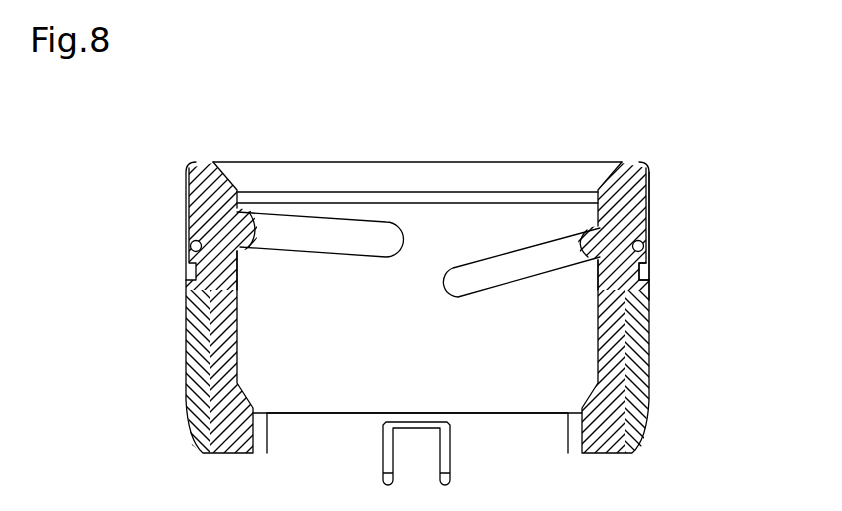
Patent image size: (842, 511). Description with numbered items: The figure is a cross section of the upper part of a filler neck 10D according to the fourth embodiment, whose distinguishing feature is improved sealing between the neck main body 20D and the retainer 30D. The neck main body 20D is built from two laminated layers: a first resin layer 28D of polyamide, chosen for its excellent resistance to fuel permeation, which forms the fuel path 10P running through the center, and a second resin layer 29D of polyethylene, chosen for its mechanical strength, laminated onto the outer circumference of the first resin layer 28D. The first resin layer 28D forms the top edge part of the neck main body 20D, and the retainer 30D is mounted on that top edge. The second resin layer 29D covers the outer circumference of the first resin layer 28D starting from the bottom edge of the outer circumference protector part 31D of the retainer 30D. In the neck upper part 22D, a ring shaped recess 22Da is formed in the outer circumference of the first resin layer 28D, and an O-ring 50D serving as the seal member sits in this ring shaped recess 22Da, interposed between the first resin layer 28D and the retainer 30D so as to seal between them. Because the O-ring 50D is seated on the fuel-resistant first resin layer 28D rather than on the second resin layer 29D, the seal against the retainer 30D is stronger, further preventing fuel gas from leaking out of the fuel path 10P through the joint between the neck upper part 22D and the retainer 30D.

The filler neck 10D is at (543, 138).
The retainer 30D is at (631, 162).
The outer circumference protector part 31D is at (652, 205).
The ring shaped recess 22Da is at (650, 241).
The O-ring 50D is at (651, 252).
The neck upper part 22D is at (651, 306).
The neck main body 20D is at (530, 355).
The first resin layer 28D is at (620, 371).
The second resin layer 29D is at (650, 404).
The fuel path 10P is at (442, 376).